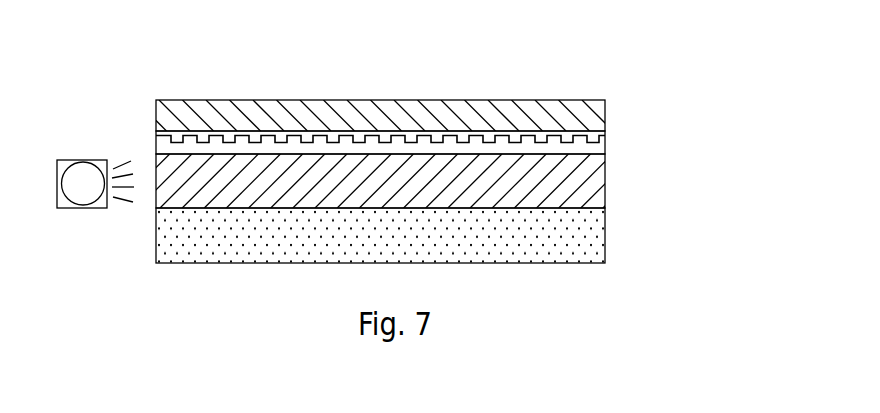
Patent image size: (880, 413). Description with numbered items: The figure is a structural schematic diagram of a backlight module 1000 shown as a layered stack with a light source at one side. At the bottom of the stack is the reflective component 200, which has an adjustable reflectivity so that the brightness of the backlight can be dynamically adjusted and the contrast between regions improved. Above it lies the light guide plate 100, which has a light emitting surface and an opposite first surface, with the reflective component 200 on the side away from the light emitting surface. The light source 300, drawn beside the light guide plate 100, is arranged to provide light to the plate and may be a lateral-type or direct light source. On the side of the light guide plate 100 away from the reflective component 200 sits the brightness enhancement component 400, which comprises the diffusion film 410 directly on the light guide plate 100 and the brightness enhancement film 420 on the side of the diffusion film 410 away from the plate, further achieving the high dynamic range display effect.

The backlight module 1000 is at (272, 67).
The brightness enhancement component 400 is at (155, 103).
The brightness enhancement film 420 is at (606, 110).
The diffusion film 410 is at (606, 137).
The light guide plate 100 is at (606, 180).
The reflective component 200 is at (606, 235).
The light source 300 is at (90, 192).